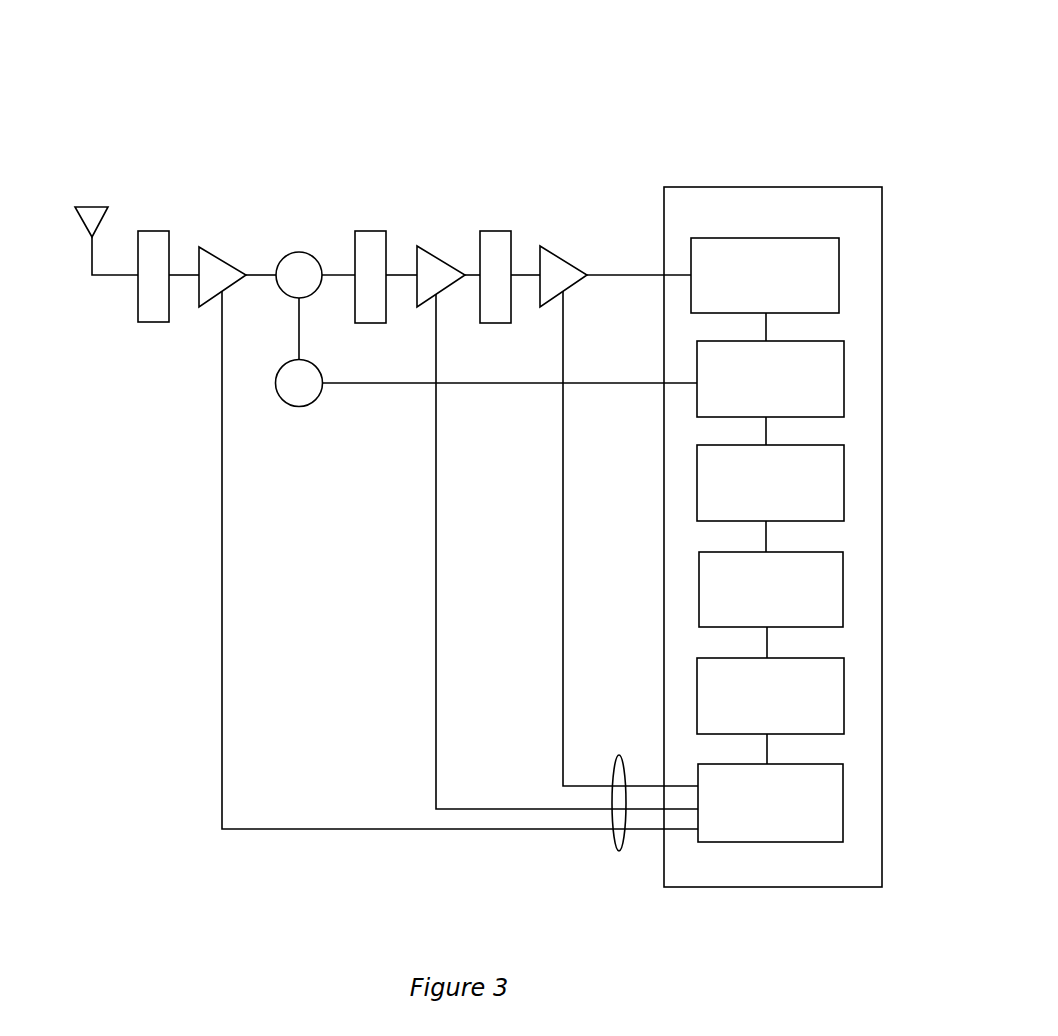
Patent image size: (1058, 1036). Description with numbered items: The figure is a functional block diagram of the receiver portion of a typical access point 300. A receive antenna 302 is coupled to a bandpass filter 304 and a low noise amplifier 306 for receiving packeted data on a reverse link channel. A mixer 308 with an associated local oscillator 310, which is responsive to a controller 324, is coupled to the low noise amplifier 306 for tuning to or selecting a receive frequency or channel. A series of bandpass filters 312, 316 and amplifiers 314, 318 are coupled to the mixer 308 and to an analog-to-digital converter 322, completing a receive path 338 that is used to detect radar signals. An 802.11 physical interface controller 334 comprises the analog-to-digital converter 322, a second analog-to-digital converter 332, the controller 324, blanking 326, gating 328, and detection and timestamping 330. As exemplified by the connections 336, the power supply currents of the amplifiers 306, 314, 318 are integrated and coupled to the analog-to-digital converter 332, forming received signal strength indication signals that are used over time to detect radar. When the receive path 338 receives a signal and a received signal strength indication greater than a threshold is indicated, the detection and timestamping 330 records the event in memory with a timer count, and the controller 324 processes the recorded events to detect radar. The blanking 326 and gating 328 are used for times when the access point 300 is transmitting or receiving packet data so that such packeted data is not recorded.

The access point 300 is at (647, 54).
The receive antenna 302 is at (102, 207).
The bandpass filter 304 is at (160, 231).
The low noise amplifier 306 is at (222, 255).
The mixer 308 is at (299, 252).
The local oscillator 310 is at (299, 407).
The bandpass filter 312 is at (373, 231).
The amplifier 314 is at (438, 257).
The bandpass filter 316 is at (497, 231).
The amplifier 318 is at (560, 258).
The analog-to-digital converter 322 is at (839, 293).
The controller 324 is at (844, 402).
The blanking 326 is at (844, 506).
The gating 328 is at (843, 612).
The detection and timestamping 330 is at (844, 717).
The analog-to-digital converter 332 is at (843, 827).
The 802.11 physical interface controller 334 is at (830, 187).
The connections 336 is at (619, 852).
The receive path 338 is at (456, 150).